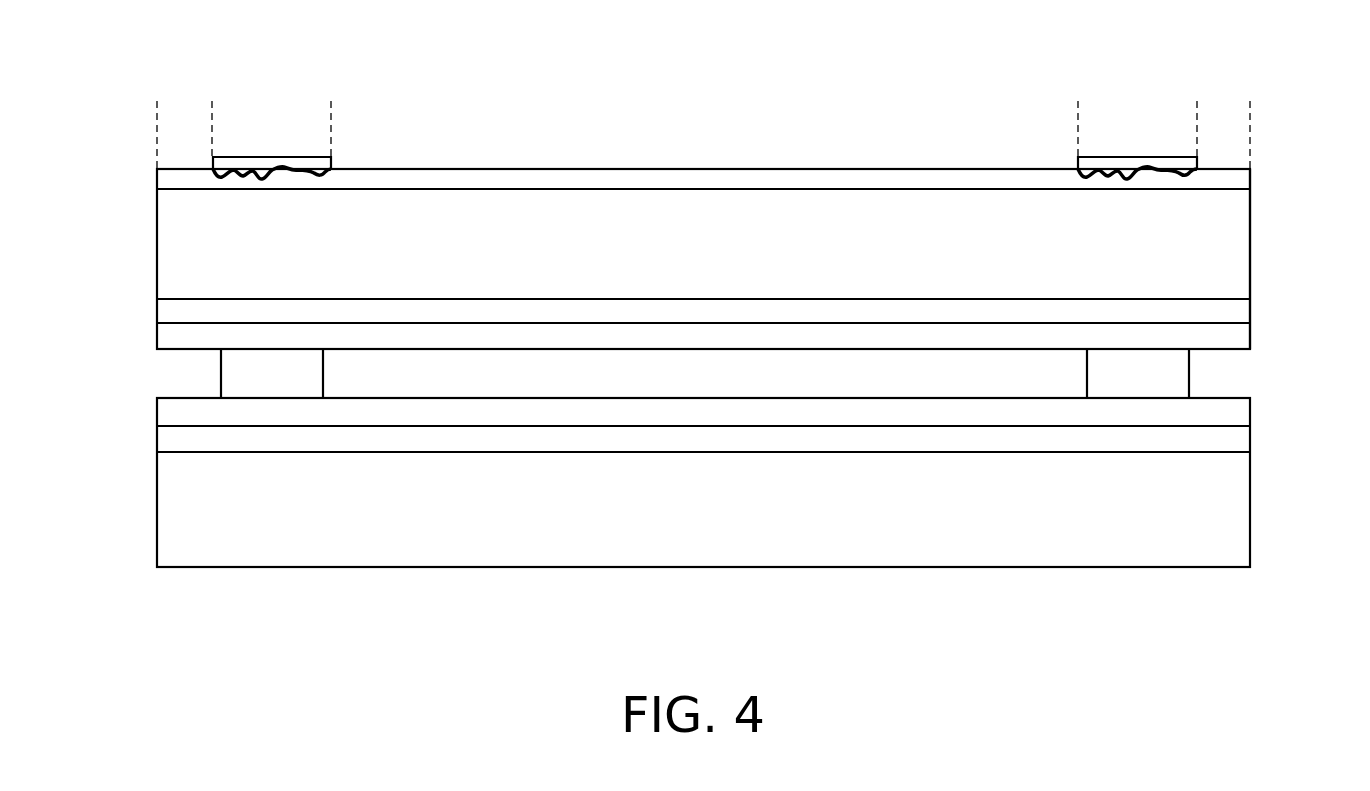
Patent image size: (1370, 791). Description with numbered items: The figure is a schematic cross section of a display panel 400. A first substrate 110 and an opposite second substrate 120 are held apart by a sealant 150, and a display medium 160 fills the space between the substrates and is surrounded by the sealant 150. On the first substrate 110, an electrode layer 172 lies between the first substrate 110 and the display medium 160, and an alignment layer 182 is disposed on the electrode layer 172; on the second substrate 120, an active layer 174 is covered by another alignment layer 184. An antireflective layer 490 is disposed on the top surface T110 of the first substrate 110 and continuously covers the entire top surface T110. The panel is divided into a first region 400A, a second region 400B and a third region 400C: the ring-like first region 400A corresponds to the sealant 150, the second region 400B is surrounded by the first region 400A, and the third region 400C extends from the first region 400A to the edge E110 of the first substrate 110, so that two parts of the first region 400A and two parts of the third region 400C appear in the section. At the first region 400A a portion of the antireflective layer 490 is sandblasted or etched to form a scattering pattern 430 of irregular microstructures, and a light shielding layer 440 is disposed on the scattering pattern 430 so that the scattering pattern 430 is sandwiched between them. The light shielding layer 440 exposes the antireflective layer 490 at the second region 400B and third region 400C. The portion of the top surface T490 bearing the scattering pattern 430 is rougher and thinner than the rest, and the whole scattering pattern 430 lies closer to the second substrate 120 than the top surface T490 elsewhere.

The display panel 400 is at (1333, 658).
The first region 400A is at (212, 108).
The second region 400B is at (331, 108).
The third region 400C is at (157, 108).
The first substrate 110 is at (855, 227).
The edge of the first substrate E110 is at (1253, 229).
The top surface of the first substrate T110 is at (1003, 190).
The second substrate 120 is at (1228, 525).
The sealant 150 is at (1175, 383).
The display medium 160 is at (1013, 382).
The electrode layer 172 is at (1240, 312).
The active layer 174 is at (1235, 439).
The alignment layer 182 is at (1245, 337).
The alignment layer 184 is at (1230, 412).
The scattering pattern 430 is at (1136, 172).
The light shielding layer 440 is at (1188, 163).
The antireflective layer 490 is at (660, 183).
The top surface of the antireflective layer T490 is at (468, 169).